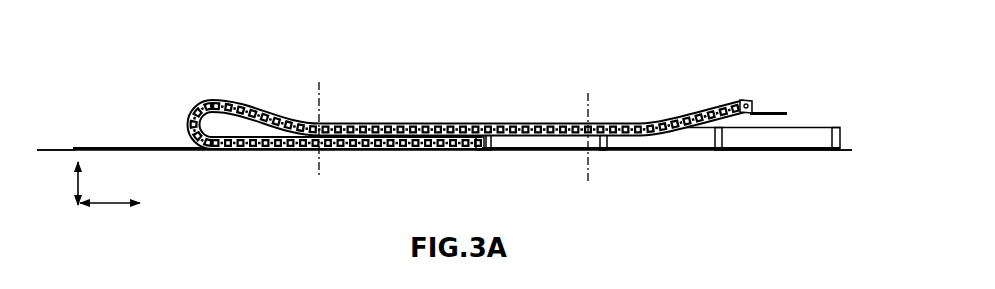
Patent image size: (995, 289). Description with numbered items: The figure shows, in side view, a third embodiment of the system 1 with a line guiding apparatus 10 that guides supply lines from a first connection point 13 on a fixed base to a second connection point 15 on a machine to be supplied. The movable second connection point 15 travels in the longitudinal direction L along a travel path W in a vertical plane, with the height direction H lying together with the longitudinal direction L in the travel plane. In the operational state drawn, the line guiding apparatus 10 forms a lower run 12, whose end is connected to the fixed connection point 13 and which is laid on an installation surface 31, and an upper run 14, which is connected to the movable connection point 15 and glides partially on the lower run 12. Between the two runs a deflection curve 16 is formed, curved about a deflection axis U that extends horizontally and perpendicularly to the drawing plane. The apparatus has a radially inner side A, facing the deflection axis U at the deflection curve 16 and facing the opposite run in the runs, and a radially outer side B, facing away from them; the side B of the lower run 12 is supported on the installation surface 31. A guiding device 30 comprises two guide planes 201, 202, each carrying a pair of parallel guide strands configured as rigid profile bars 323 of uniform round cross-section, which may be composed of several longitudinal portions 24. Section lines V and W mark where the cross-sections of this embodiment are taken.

The line guiding device arrangement 1 is at (125, 65).
The line guiding apparatus 10 is at (457, 126).
The lower run 12 is at (421, 150).
The first connection point 13 is at (470, 164).
The upper run 14 is at (460, 123).
The second connection point 15 is at (746, 101).
The deflection curve 16 is at (188, 112).
The longitudinal portions 24 is at (702, 141).
The guiding device 30 is at (820, 56).
The installation surface 31 is at (53, 148).
The lower guide plane 201 is at (802, 152).
The upper guide plane 202 is at (818, 127).
The profile bars 323 is at (117, 148).
The radially inner side A is at (642, 138).
The radially outer side B is at (207, 90).
The deflection axis U is at (212, 172).
The height direction H is at (65, 183).
The longitudinal direction L is at (110, 189).
The section line V- V is at (317, 91).
The travel path W is at (586, 102).